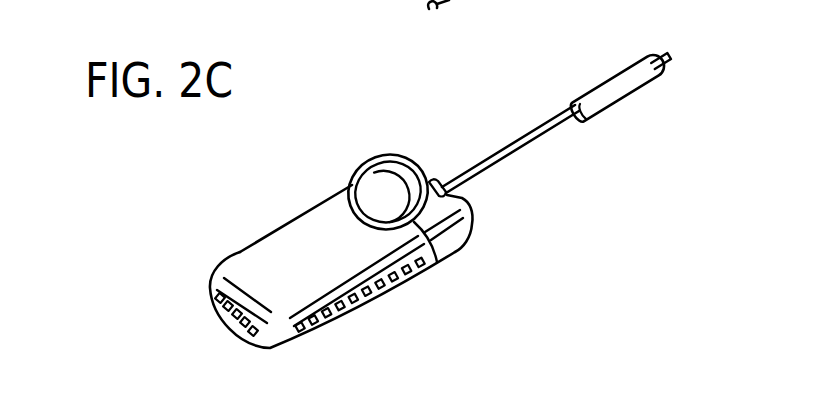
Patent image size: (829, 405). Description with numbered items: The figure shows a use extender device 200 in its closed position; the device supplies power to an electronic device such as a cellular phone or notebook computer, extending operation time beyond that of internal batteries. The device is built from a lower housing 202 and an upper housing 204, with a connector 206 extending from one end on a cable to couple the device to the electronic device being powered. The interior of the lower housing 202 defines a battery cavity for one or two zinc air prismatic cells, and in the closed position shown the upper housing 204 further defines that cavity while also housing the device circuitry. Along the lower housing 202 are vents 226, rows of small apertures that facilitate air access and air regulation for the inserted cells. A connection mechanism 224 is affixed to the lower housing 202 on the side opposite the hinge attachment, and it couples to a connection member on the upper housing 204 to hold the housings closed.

The use extender device 200 is at (440, 335).
The lower housing 202 is at (235, 257).
The upper housing 204 is at (452, 238).
The connector 206 is at (471, 182).
The connection mechanism 224 is at (383, 190).
The vents 226 is at (385, 288).